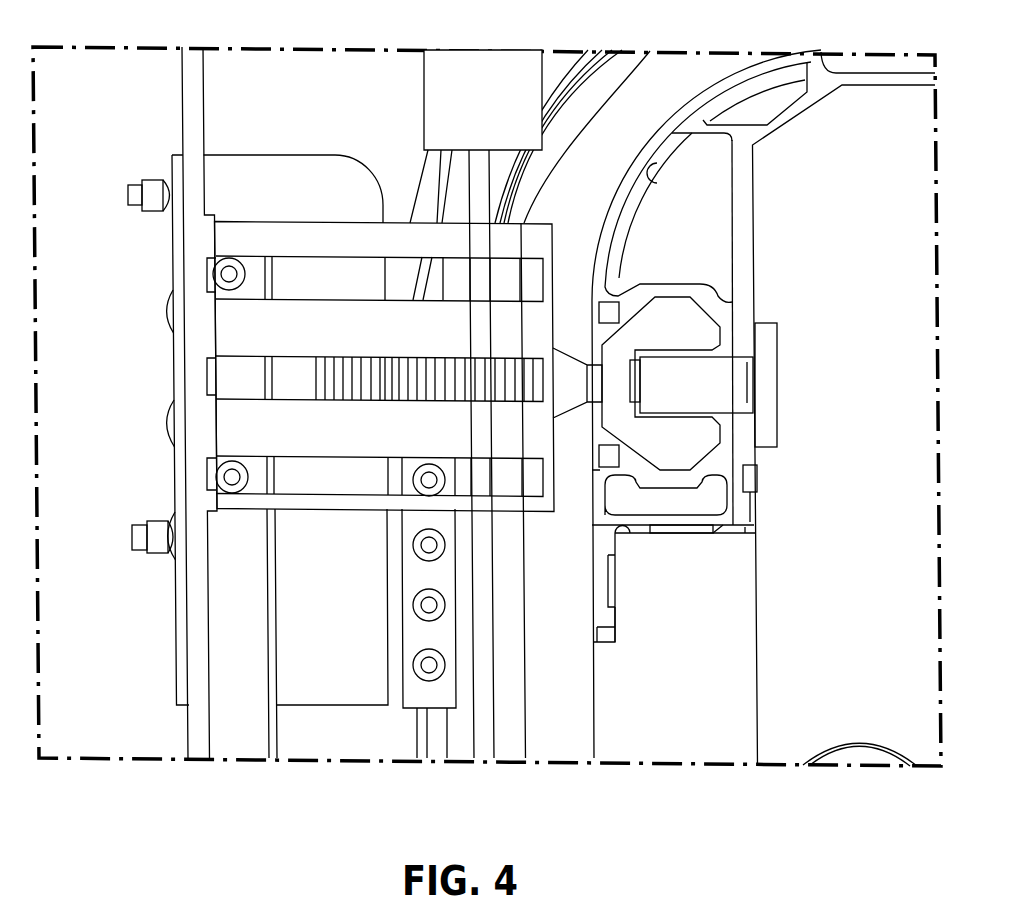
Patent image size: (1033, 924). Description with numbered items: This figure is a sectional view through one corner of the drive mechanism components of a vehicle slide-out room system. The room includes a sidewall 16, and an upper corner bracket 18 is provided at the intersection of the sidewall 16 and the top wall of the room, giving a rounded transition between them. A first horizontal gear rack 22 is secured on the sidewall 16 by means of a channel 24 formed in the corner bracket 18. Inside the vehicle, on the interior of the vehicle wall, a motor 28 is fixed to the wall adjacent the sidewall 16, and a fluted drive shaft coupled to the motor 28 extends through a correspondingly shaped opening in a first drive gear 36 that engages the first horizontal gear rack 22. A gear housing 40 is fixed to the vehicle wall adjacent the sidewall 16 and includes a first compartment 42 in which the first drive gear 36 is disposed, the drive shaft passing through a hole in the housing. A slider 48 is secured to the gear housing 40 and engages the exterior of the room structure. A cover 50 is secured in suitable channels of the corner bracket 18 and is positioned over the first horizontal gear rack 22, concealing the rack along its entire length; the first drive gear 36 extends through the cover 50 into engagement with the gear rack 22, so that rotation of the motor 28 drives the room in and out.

The sidewall 16 is at (723, 663).
The upper corner bracket 18 is at (796, 198).
The first horizontal gear rack 22 is at (711, 388).
The channel 24 is at (720, 462).
The motor 28 is at (440, 83).
The first drive gear 36 is at (327, 395).
The gear housing 40 is at (407, 454).
The first compartment 42 is at (228, 373).
The slider 48 is at (675, 330).
The cover 50 is at (608, 312).